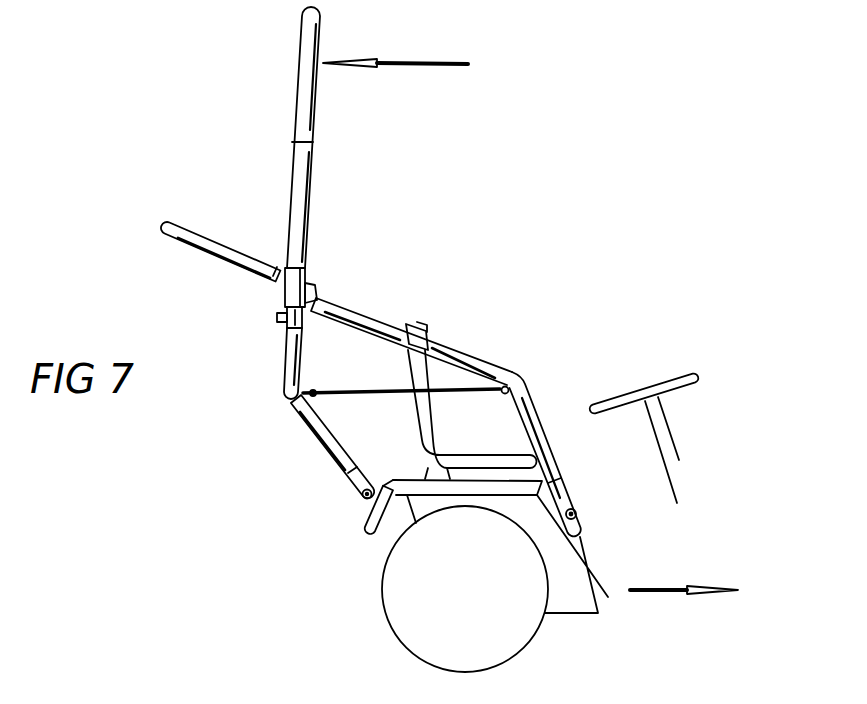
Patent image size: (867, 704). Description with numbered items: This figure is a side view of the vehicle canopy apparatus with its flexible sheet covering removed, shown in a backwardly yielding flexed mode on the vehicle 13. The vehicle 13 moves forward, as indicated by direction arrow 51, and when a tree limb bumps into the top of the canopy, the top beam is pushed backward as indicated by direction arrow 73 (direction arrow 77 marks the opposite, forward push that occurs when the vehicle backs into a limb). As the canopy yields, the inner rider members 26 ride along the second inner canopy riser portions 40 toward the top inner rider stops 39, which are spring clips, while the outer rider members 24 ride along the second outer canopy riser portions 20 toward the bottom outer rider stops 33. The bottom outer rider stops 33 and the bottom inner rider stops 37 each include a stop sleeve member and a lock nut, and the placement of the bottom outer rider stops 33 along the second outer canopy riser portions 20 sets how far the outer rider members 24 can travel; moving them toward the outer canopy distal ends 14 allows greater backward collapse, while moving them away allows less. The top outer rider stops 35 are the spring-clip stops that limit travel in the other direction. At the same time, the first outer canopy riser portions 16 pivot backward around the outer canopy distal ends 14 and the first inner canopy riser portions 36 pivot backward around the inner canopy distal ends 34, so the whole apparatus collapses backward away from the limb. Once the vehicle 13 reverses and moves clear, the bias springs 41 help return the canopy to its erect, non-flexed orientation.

The vehicle 13 is at (532, 645).
The outer canopy distal ends 14 is at (355, 505).
The first outer canopy riser portions 16 is at (303, 440).
The second outer canopy riser portions 20 is at (293, 170).
The outer rider members 24 is at (287, 285).
The inner rider members 26 is at (316, 279).
The bottom outer rider stops 33 is at (279, 322).
The inner canopy distal ends 34 is at (587, 498).
The top outer rider stops 35 is at (312, 142).
The first inner canopy riser portions 36 is at (545, 402).
The bottom inner rider stops 37 is at (428, 326).
The top inner rider stops 39 is at (280, 268).
The second inner canopy riser portions 40 is at (380, 302).
The bias springs 41 is at (351, 396).
The direction arrow 51 is at (668, 593).
The direction arrow 73 is at (430, 63).
The direction arrow 77 is at (438, 527).